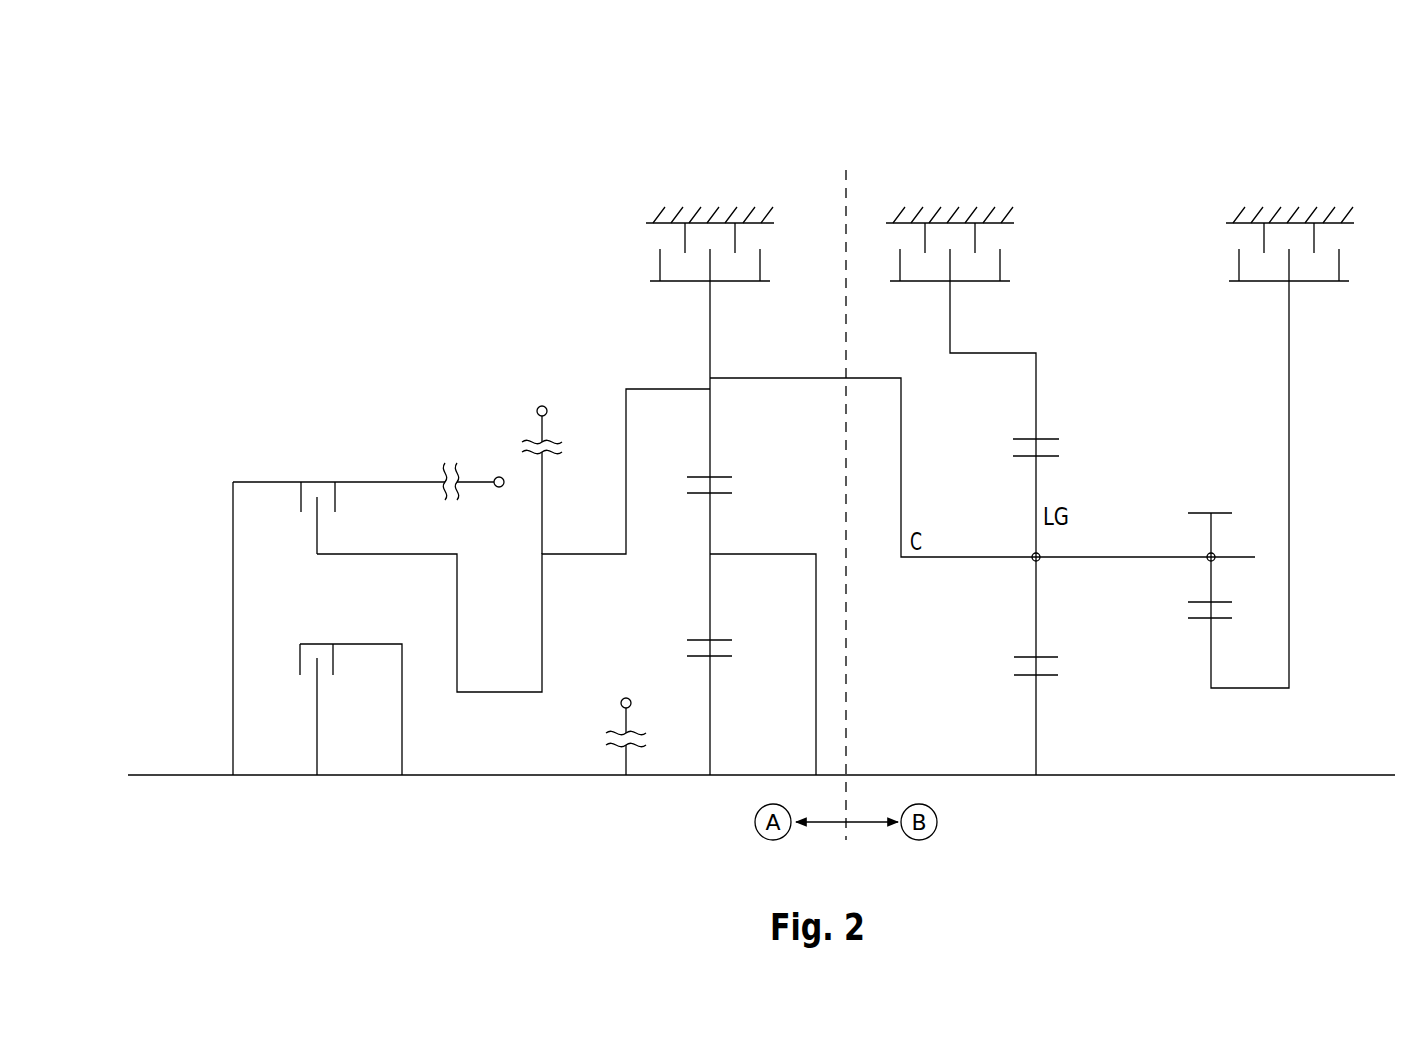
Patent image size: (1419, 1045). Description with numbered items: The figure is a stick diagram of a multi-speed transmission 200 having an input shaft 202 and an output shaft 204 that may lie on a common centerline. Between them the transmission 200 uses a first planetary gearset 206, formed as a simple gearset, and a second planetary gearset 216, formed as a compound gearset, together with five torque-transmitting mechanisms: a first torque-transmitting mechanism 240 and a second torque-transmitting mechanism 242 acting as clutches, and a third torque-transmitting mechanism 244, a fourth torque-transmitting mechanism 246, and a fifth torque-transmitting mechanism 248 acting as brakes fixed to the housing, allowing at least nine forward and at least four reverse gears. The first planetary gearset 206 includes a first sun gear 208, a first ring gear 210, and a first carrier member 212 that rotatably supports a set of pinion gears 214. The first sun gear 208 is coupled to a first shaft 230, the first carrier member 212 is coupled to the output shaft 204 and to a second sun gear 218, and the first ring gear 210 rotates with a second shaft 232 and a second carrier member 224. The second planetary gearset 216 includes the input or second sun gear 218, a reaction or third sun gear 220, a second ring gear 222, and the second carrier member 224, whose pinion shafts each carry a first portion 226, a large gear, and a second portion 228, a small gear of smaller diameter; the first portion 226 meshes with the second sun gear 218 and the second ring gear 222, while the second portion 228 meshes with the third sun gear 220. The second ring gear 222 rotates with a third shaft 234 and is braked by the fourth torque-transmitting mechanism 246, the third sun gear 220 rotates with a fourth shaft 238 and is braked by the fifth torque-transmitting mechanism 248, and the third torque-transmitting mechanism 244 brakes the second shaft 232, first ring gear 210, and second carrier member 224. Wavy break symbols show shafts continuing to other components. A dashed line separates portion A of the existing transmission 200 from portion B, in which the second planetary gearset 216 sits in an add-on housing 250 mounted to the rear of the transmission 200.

The multi-speed transmission 200 is at (343, 150).
The input shaft 202 is at (170, 773).
The output shaft 204 is at (1370, 773).
The first planetary gearset 206 is at (710, 822).
The first sun gear 208 is at (720, 660).
The first ring gear 210 is at (725, 473).
The first carrier member 212 is at (704, 559).
The pinion gears 214 is at (727, 637).
The second planetary gearset 216 is at (1037, 814).
The second sun gear 218 is at (1020, 677).
The third sun gear 220 is at (1200, 620).
The second ring gear 222 is at (1050, 437).
The second carrier member 224 is at (1121, 520).
The first portion 226 is at (1025, 456).
The second portion 228 is at (1222, 512).
The first shaft 230 is at (535, 777).
The second shaft 232 is at (383, 553).
The third shaft 234 is at (952, 313).
The fourth shaft 238 is at (1290, 446).
The first torque-transmitting mechanism 240 is at (297, 660).
The second torque-transmitting mechanism 242 is at (298, 498).
The third torque-transmitting mechanism 244 is at (618, 246).
The fourth torque-transmitting mechanism 246 is at (1020, 236).
The fifth torque-transmitting mechanism 248 is at (1360, 238).
The add-on housing 250 is at (1152, 145).